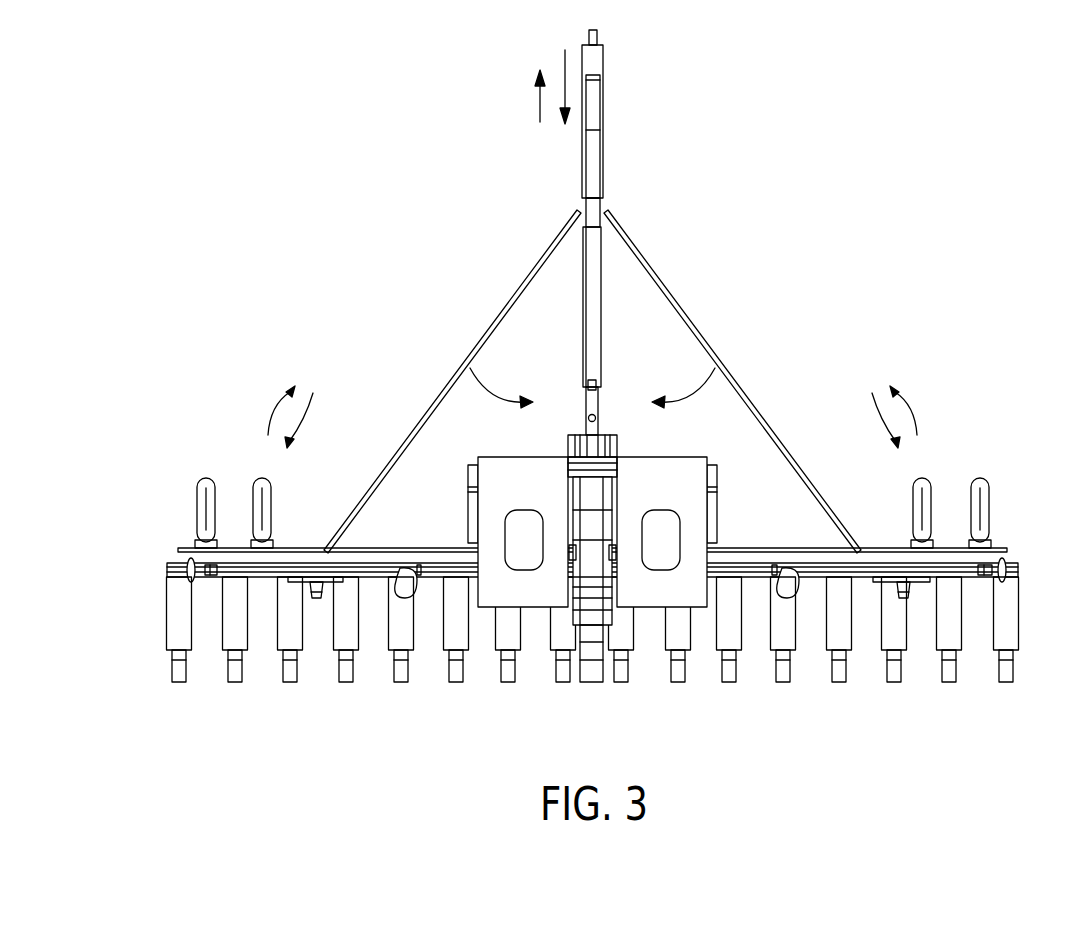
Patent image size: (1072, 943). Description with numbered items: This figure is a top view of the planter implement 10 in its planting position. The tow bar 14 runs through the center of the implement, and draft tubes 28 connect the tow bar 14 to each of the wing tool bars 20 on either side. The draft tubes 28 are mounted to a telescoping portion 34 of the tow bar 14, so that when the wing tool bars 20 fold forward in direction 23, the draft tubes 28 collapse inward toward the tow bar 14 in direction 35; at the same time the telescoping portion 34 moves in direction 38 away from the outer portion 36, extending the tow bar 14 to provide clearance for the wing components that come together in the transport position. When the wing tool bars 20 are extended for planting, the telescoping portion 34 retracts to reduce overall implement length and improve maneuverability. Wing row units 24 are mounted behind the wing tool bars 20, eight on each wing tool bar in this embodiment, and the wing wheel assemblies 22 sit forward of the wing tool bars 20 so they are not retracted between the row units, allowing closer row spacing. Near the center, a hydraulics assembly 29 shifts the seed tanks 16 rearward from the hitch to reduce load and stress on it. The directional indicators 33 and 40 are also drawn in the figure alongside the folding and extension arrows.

The planter implement 10 is at (283, 168).
The tow bar 14 is at (593, 182).
The seed tanks 16 is at (650, 600).
The wing tool bars 20 is at (284, 555).
The wing wheel assemblies 22 is at (205, 460).
The forward folding direction 23 is at (275, 417).
The wing row units 24 is at (292, 695).
The draft tubes 28 is at (750, 398).
The hydraulics assembly 29 is at (592, 378).
The opposite rotation direction 33 is at (303, 416).
The telescoping portion 34 is at (593, 140).
The inward collapsing direction 35 is at (490, 390).
The outer portion 36 is at (593, 253).
The extension direction 38 is at (540, 100).
The downward direction 40 is at (562, 98).